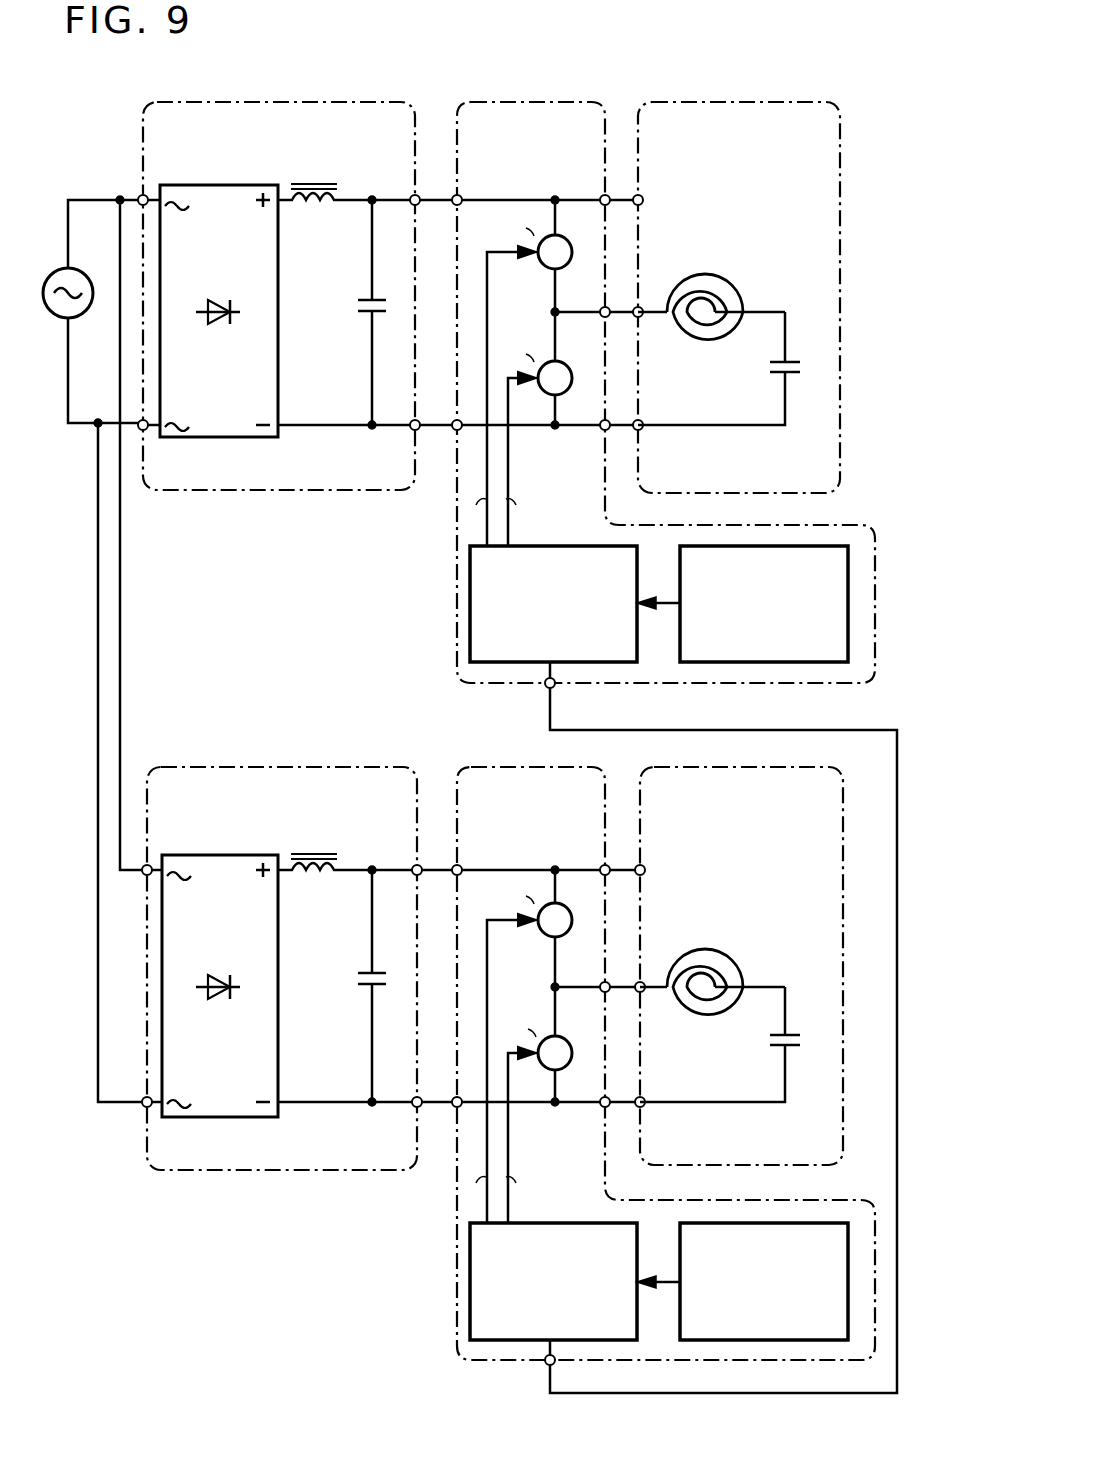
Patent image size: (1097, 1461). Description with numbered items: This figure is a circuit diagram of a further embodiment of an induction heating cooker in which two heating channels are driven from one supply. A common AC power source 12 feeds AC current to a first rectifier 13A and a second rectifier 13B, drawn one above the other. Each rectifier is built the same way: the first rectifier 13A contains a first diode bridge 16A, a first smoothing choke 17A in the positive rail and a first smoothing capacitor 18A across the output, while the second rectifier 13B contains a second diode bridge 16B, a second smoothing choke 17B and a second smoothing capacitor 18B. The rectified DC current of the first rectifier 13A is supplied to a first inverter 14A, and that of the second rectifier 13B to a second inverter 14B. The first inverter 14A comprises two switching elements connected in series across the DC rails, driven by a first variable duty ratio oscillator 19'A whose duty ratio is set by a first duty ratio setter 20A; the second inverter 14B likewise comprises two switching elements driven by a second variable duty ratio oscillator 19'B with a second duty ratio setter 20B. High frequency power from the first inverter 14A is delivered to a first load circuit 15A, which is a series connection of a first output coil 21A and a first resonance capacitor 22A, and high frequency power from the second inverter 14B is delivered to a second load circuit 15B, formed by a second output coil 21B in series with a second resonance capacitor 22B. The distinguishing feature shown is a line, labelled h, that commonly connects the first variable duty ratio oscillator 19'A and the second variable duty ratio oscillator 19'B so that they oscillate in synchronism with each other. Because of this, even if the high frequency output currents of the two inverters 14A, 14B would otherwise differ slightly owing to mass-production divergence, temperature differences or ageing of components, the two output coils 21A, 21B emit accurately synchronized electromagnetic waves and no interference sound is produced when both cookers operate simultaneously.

The AC power source 12 is at (50, 278).
The first rectifier 13A is at (234, 102).
The second rectifier 13B is at (234, 767).
The first inverter 14A is at (489, 102).
The second inverter 14B is at (503, 767).
The first load circuit 15A is at (678, 102).
The second load circuit 15B is at (721, 767).
The first diode bridge 16A is at (248, 437).
The second diode bridge 16B is at (250, 1117).
The first smoothing choke 17A is at (310, 208).
The second smoothing choke 17B is at (310, 880).
The first smoothing capacitor 18A is at (366, 312).
The second smoothing capacitor 18B is at (360, 994).
The first variable duty ratio oscillator 19'A is at (683, 936).
The second variable duty ratio oscillator 19'B is at (553, 1261).
The first duty ratio setter 20A is at (781, 546).
The second duty ratio setter 20B is at (787, 1223).
The first output coil 21A is at (716, 274).
The second output coil 21B is at (723, 944).
The first resonance capacitor 22A is at (778, 382).
The second resonance capacitor 22B is at (764, 1058).